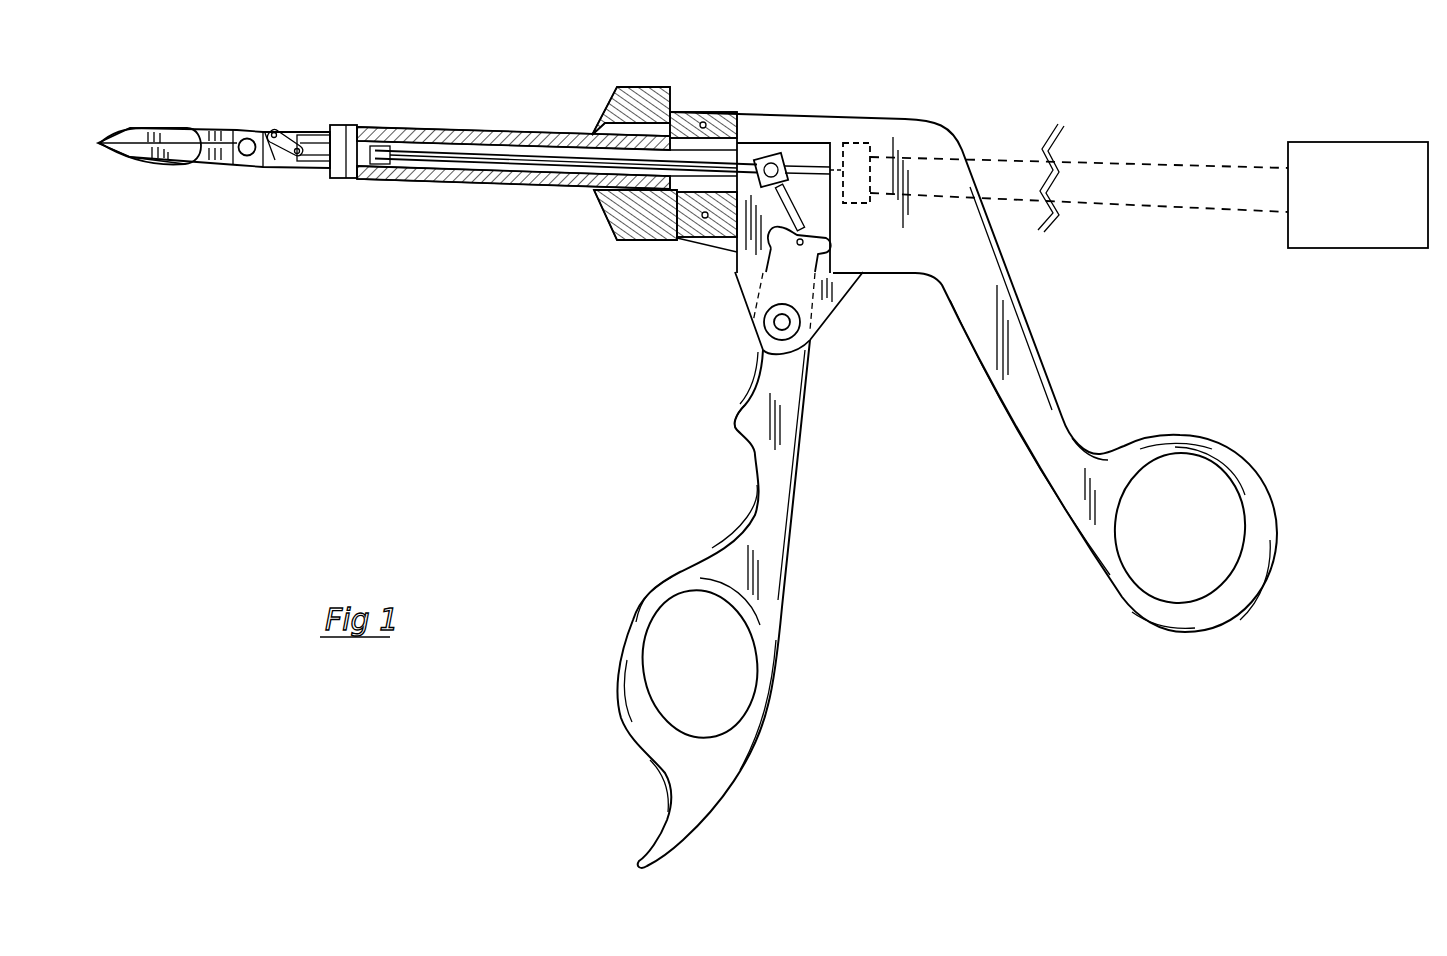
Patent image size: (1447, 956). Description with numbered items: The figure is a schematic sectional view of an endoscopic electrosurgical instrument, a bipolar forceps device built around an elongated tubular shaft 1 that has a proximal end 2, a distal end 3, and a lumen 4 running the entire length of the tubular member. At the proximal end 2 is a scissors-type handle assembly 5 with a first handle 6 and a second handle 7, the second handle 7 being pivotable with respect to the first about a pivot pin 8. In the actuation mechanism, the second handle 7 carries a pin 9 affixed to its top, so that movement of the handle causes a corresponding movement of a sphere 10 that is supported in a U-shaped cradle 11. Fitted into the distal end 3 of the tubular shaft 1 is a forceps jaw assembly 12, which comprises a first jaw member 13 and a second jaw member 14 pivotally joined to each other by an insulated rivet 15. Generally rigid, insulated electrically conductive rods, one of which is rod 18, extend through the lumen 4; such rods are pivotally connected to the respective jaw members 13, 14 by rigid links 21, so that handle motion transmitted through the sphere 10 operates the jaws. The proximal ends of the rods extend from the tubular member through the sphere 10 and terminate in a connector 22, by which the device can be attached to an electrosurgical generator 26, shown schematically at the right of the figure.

The elongated tubular shaft 1 is at (523, 189).
The proximal end 2 is at (568, 193).
The distal end 3 is at (340, 182).
The lumen 4 is at (437, 178).
The scissors-type handle assembly 5 is at (768, 604).
The first handle 6 is at (1038, 332).
The second handle 7 is at (738, 450).
The pivot pin 8 is at (772, 331).
The pin 9 is at (800, 230).
The sphere 10 is at (781, 154).
The U-shaped cradle 11 is at (784, 158).
The forceps jaw assembly 12 is at (160, 122).
The first jaw member 13 is at (128, 157).
The second jaw member 14 is at (128, 131).
The insulated rivet 15 is at (248, 156).
The electrically conductive rod 18 is at (413, 130).
The rigid links 21 is at (280, 128).
The connector 22 is at (872, 172).
The electrosurgical generator 26 is at (1386, 234).